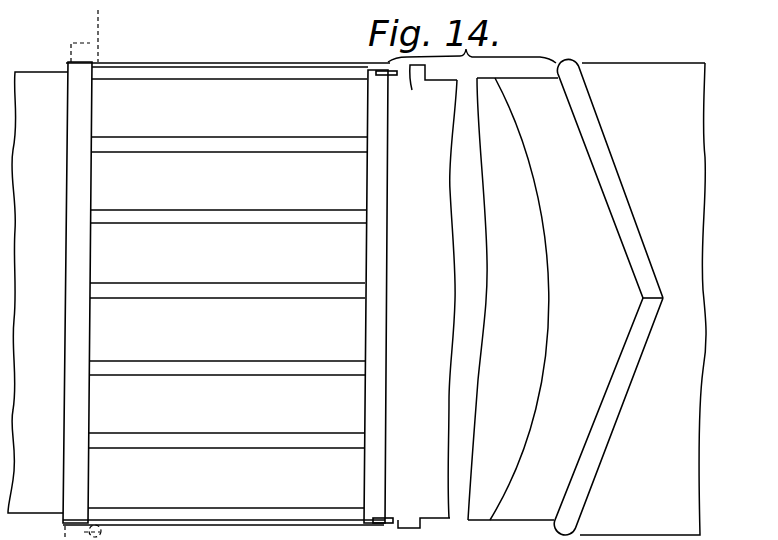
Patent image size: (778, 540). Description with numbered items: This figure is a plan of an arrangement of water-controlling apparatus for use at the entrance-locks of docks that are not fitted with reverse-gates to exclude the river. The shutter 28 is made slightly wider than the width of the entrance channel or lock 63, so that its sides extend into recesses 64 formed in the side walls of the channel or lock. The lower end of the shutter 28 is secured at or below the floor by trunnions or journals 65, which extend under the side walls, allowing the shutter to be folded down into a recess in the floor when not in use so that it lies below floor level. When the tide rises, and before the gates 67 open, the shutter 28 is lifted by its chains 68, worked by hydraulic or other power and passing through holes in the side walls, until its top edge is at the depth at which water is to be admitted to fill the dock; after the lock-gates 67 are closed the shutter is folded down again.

The shutter 28 is at (227, 293).
The entrance channel or lock 63 is at (396, 296).
The recesses in the side walls 64 is at (405, 520).
The trunnions or journals 65 is at (90, 50).
The gates 67 is at (643, 318).
The chains 68 is at (251, 70).